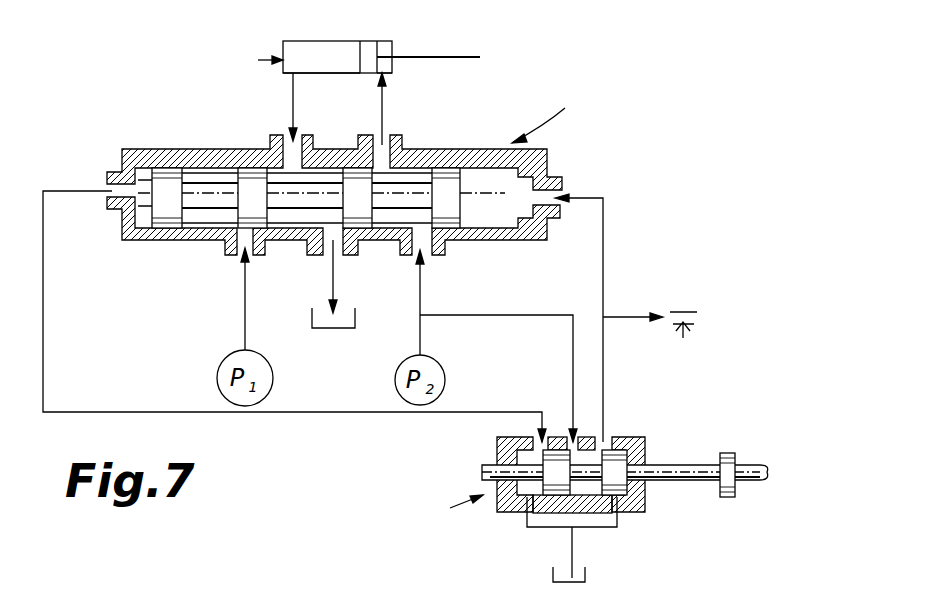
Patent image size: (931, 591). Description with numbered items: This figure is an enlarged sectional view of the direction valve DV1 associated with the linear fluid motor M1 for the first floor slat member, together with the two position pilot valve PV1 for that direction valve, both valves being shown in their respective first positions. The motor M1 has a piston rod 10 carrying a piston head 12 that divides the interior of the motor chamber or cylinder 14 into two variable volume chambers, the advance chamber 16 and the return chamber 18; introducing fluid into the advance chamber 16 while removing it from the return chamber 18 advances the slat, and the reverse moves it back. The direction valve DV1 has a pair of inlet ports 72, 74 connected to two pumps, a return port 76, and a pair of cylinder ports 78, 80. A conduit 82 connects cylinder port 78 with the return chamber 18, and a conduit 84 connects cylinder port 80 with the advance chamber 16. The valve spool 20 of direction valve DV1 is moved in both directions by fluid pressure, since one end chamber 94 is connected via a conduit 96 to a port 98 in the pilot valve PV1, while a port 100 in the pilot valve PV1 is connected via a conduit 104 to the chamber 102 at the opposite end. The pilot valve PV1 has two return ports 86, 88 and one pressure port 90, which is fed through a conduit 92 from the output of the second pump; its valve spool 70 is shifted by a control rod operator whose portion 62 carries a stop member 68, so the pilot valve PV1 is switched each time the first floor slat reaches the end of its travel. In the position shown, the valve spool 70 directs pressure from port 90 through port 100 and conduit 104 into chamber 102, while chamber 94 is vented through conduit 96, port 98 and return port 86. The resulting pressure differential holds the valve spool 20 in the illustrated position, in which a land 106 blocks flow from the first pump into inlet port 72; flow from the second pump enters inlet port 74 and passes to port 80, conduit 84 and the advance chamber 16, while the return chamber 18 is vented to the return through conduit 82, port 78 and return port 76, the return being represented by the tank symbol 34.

The piston rod 10 is at (462, 54).
The piston head 12 is at (378, 42).
The motor chamber or cylinder 14 is at (335, 74).
The advance chamber 16 is at (392, 65).
The return chamber 18 is at (298, 43).
The valve spool 20 is at (203, 202).
The tank / reservoir 34 is at (650, 337).
The portion of control rod operator 62 is at (760, 477).
The stop member 68 is at (727, 500).
The valve spool 70 is at (556, 512).
The inlet port 72 is at (240, 250).
The inlet port 74 is at (430, 245).
The return port 76 is at (337, 250).
The cylinder port 78 is at (288, 135).
The cylinder port 80 is at (396, 136).
The conduit 82 is at (293, 91).
The conduit 84 is at (382, 103).
The return port 86 is at (522, 515).
The return port 88 is at (620, 515).
The pressure port 90 is at (562, 438).
The conduit 92 is at (495, 316).
The end chamber 94 is at (134, 222).
The conduit 96 is at (288, 414).
The port 98 is at (535, 430).
The port 100 is at (612, 440).
The chamber 102 is at (530, 186).
The conduit 104 is at (603, 265).
The land 106 is at (279, 248).
The linear fluid motor M1 is at (253, 61).
The direction valve DV1 is at (559, 113).
The pilot valve PV1 is at (440, 509).